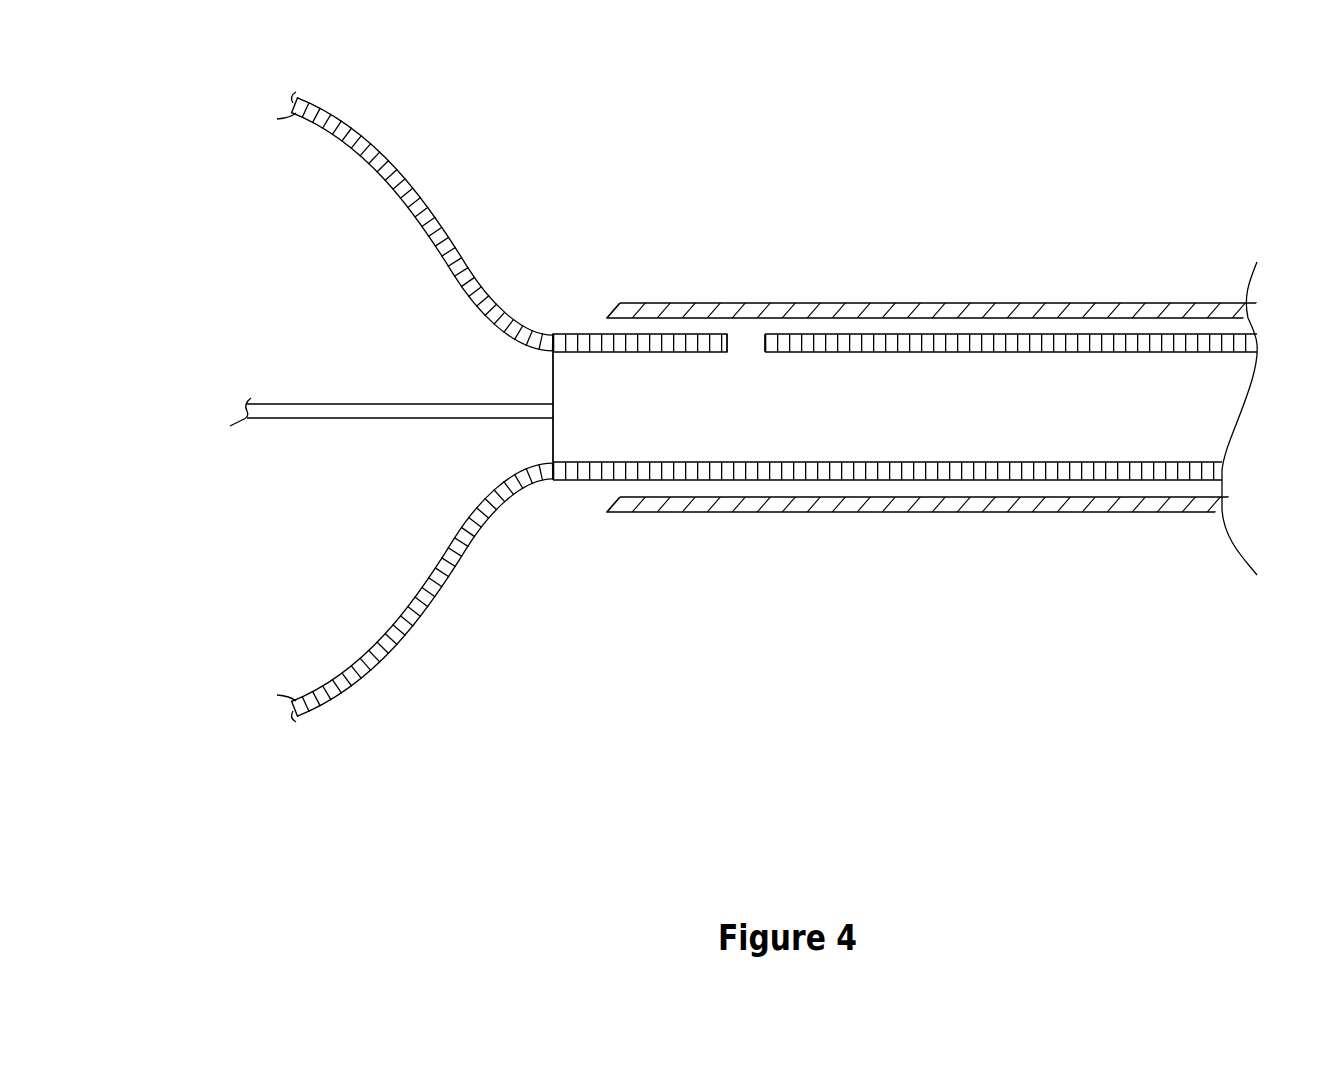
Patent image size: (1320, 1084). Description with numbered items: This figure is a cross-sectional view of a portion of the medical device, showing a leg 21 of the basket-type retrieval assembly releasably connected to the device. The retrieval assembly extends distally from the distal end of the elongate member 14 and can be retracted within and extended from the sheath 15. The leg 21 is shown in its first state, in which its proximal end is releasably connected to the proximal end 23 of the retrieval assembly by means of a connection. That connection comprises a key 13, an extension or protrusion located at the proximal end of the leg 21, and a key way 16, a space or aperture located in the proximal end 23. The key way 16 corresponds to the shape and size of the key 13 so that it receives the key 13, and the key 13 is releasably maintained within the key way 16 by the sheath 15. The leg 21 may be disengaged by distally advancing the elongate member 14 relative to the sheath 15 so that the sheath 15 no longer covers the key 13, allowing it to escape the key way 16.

The key 13 is at (571, 334).
The elongate member 14 is at (1077, 340).
The sheath 15 is at (1023, 512).
The key way 16 is at (745, 343).
The leg 21 is at (355, 147).
The proximal end 23 is at (598, 433).